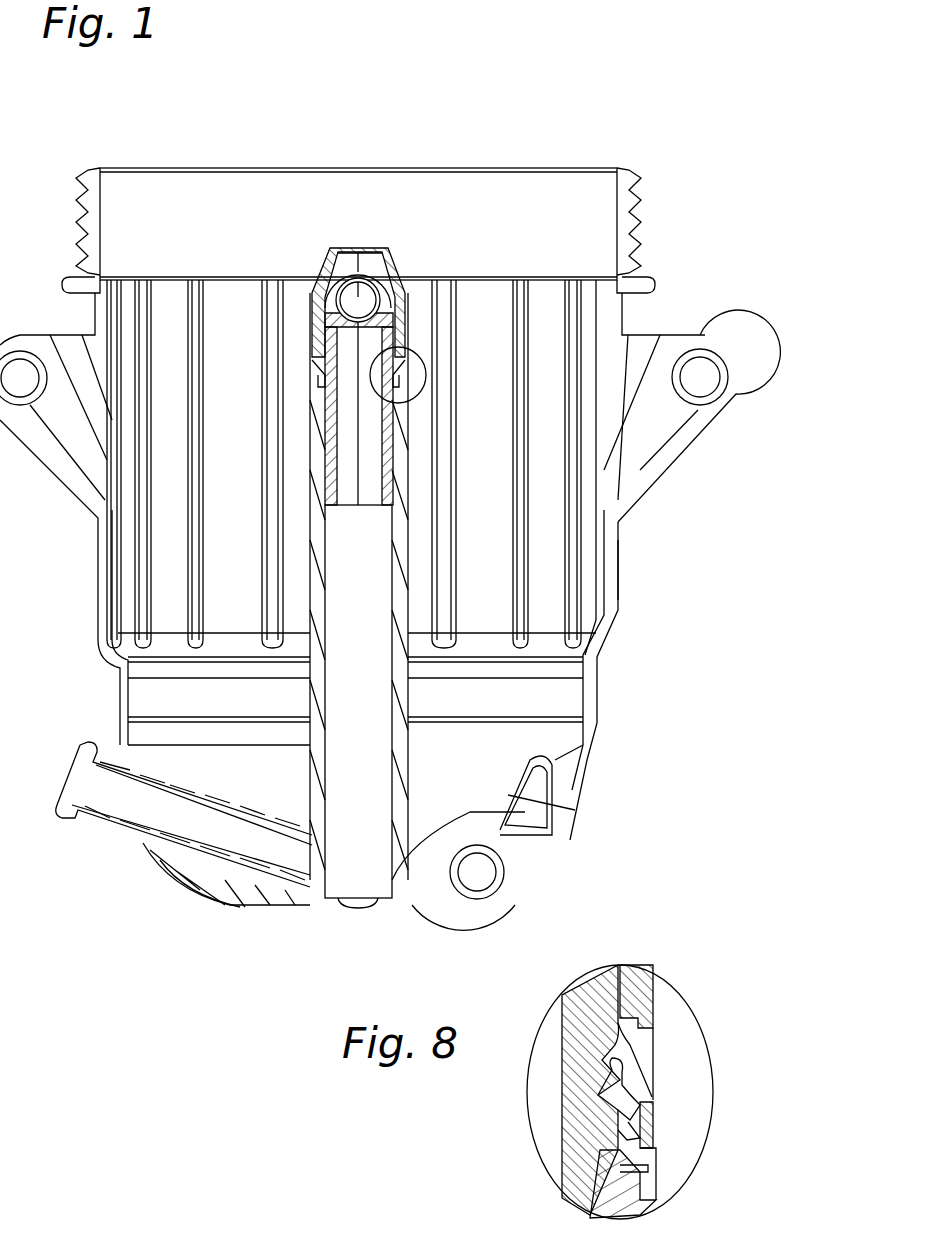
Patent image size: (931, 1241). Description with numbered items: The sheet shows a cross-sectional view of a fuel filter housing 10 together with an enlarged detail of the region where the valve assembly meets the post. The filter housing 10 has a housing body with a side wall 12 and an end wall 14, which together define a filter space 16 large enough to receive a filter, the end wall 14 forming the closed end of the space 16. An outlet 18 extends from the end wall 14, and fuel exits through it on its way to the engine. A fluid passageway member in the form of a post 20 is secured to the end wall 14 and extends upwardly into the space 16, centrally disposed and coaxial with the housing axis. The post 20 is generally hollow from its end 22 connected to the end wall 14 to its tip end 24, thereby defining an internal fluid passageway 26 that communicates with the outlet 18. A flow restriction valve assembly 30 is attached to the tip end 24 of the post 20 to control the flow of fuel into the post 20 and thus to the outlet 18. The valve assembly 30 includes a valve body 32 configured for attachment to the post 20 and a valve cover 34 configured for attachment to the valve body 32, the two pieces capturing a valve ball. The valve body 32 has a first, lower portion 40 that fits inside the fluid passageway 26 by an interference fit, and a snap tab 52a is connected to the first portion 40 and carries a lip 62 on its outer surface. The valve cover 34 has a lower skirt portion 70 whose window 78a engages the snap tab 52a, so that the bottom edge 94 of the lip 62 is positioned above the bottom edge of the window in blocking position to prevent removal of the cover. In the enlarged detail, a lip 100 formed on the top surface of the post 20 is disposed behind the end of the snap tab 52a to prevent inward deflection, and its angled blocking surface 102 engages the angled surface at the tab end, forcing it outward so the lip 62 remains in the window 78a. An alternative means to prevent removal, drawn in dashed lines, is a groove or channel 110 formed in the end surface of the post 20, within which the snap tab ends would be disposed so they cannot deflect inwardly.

In FIG. 1, the filter housing 10 is at (670, 548).
In FIG. 1, the side wall 12 is at (100, 598).
In FIG. 1, the end wall 14 is at (215, 890).
In FIG. 1, the filter space 16 is at (240, 308).
In FIG. 1, the outlet 18 is at (95, 828).
In FIG. 1, the post 20 is at (400, 770).
In FIG. 8, the post 20 is at (635, 1205).
In FIG. 1, the end 22 is at (403, 880).
In FIG. 1, the tip end 24 is at (318, 415).
In FIG. 1, the internal fluid passageway 26 is at (365, 680).
In FIG. 1, the flow restriction valve assembly 30 is at (352, 230).
In FIG. 1, the valve body 32 is at (397, 462).
In FIG. 1, the valve cover 34 is at (397, 245).
In FIG. 8, the first, lower portion 40 is at (572, 1042).
In FIG. 8, the skirt portion 70 is at (650, 992).
In FIG. 8, the window 78a is at (643, 1052).
In FIG. 8, the snap tab 52a is at (630, 1078).
In FIG. 8, the lip 62 is at (655, 1095).
In FIG. 8, the bottom edge 94 is at (654, 1106).
In FIG. 8, the angled blocking surface 102 is at (655, 1130).
In FIG. 8, the lip 100 is at (600, 1120).
In FIG. 8, the groove or channel 110 is at (660, 1180).